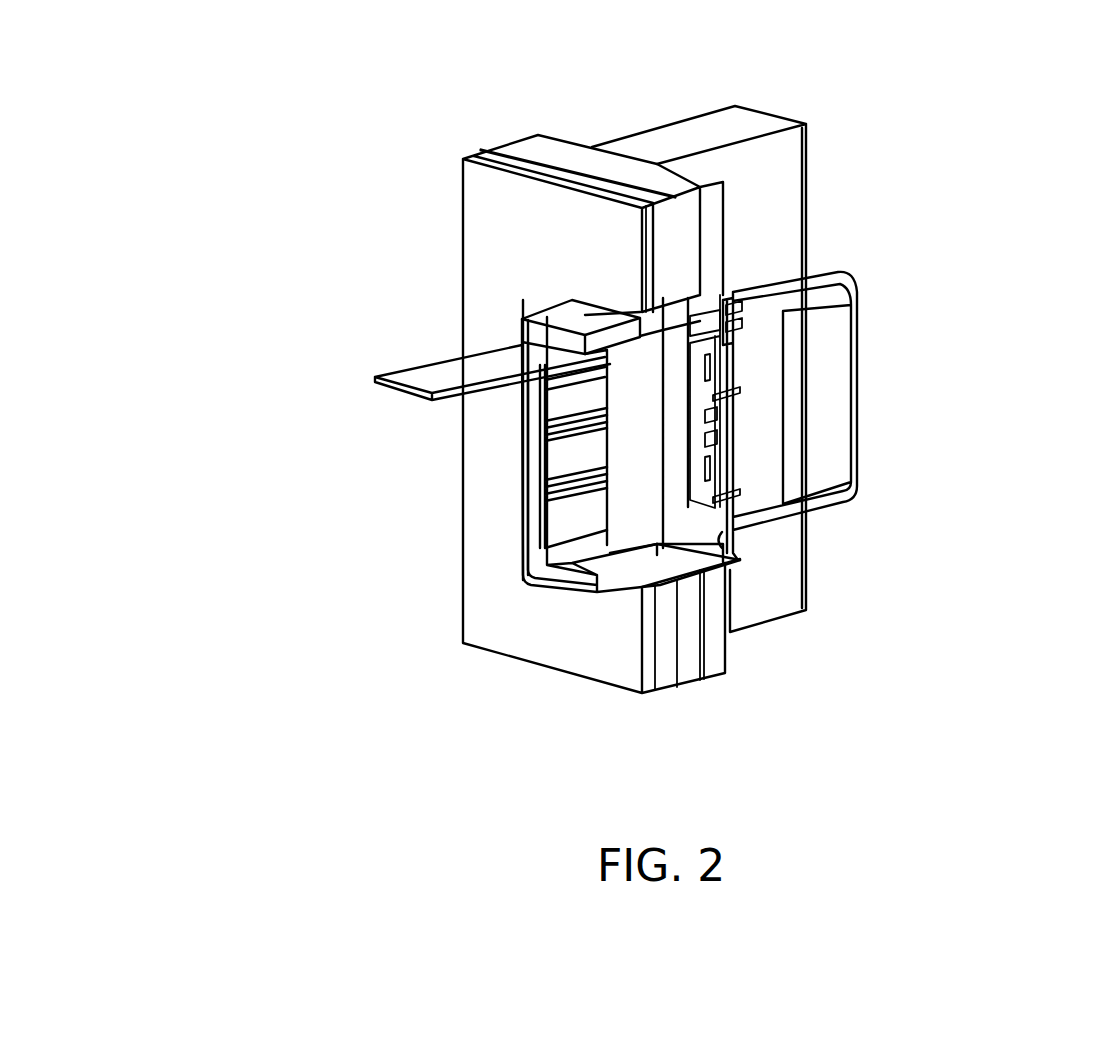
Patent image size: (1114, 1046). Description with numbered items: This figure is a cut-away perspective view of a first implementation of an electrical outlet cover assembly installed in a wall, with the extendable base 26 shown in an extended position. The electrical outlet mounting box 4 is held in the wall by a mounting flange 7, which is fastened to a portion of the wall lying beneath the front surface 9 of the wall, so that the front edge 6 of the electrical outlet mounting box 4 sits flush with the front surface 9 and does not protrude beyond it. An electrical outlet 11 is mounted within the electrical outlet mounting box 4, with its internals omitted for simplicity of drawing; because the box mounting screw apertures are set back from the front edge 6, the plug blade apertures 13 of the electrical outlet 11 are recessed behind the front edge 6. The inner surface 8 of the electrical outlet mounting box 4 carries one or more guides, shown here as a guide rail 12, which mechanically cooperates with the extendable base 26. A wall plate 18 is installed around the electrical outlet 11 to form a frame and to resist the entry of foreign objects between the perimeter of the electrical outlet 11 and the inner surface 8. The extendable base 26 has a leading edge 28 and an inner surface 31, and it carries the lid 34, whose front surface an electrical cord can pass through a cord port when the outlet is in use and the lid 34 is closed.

The electrical outlet mounting box 4 is at (860, 430).
The front edge 6 is at (603, 303).
The mounting flange 7 is at (700, 268).
The inner surface 8 is at (672, 550).
The front surface 9 is at (520, 285).
The electrical outlet 11 is at (758, 442).
The guide rail 12 is at (640, 417).
The plug blade apertures 13 is at (707, 368).
The wall plate 18 is at (680, 312).
The extendable base 26 is at (585, 316).
The leading edge 28 is at (548, 332).
The inner surface 31 is at (615, 568).
The lid 34 is at (447, 373).